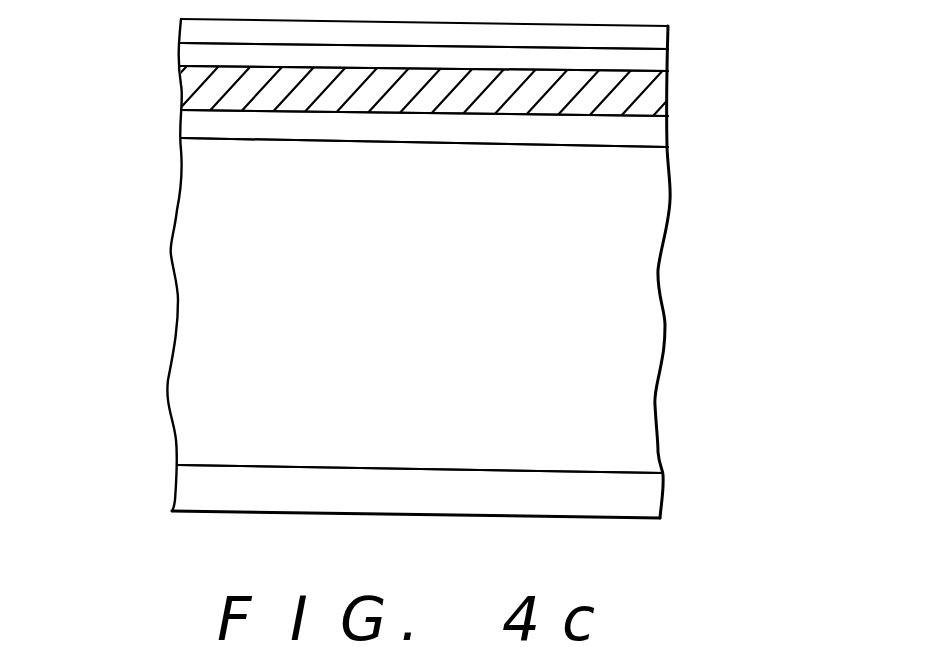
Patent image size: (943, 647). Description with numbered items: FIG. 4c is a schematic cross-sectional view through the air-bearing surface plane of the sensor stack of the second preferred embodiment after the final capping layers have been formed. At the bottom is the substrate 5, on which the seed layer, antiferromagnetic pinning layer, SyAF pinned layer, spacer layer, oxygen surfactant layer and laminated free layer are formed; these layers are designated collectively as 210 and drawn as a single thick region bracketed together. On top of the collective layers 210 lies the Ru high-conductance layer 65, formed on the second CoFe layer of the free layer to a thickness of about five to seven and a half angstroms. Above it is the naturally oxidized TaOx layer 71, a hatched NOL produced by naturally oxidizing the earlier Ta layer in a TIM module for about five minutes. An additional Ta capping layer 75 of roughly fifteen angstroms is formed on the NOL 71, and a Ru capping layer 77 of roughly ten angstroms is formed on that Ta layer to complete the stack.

The Ru capping layer 77 is at (643, 35).
The Ta capping layer 75 is at (643, 64).
The naturally oxidized TaOx layer 71 is at (640, 104).
The Ru high-conductance layer 65 is at (635, 133).
The layers collectively designated 210 is at (147, 138).
The substrate 5 is at (642, 494).